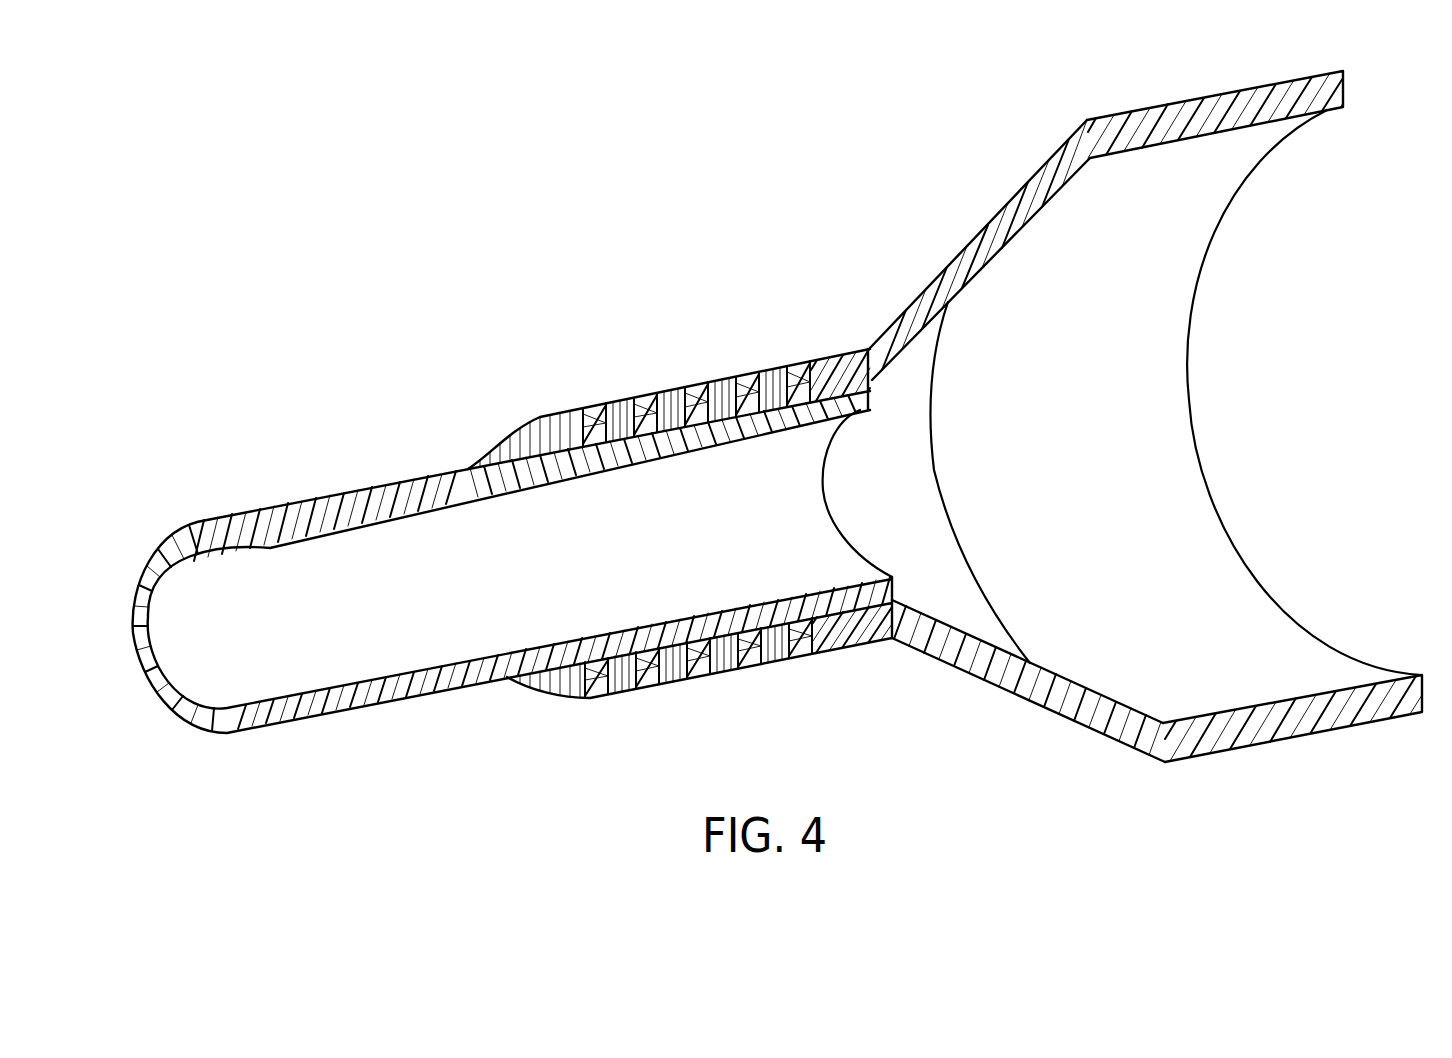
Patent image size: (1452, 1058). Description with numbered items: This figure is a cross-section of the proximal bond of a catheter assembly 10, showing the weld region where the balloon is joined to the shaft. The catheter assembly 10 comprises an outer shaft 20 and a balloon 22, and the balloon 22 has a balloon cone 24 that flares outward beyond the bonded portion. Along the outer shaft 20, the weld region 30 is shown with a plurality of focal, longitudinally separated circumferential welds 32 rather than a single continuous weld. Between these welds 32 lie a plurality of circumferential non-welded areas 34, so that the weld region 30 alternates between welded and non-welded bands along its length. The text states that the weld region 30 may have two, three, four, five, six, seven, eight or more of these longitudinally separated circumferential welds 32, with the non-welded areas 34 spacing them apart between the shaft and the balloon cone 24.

The catheter assembly 10 is at (440, 240).
The outer shaft 20 is at (260, 505).
The balloon 22 is at (1188, 102).
The balloon cone 24 is at (978, 233).
The weld region 30 is at (868, 343).
The circumferential welds 32 is at (538, 695).
The circumferential non-welded areas 34 is at (598, 690).